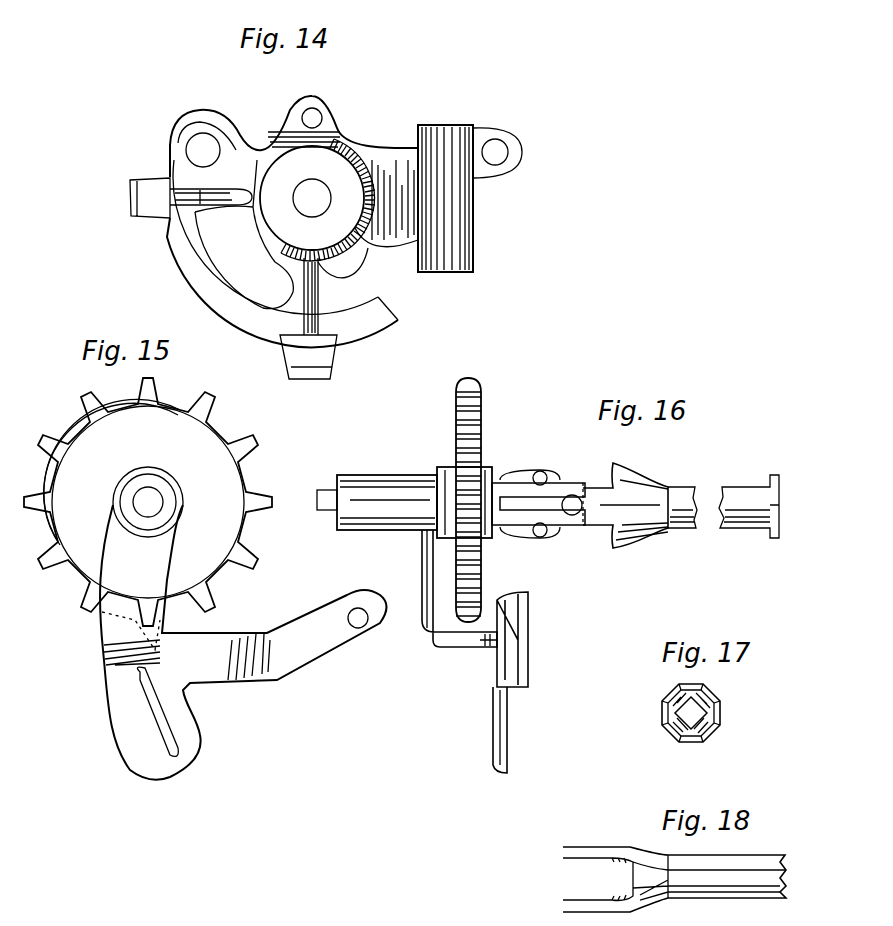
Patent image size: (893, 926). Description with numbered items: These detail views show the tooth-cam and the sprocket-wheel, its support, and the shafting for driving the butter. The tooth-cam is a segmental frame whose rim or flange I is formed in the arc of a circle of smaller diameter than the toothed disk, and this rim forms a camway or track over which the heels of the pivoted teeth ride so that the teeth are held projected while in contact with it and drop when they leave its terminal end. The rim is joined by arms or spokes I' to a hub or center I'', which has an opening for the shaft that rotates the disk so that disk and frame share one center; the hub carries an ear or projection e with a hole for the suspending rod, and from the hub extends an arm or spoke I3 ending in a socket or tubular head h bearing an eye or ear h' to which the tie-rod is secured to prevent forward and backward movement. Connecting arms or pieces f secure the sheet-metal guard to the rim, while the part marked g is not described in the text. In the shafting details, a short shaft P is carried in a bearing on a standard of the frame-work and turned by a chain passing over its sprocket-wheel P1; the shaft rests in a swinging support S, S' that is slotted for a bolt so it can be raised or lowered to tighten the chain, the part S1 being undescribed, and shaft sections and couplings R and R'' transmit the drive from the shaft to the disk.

In FIG. 14, the ear or projection e is at (326, 109).
In FIG. 14, the arms or spokes I' is at (209, 155).
In FIG. 14, the hub or center I'' is at (317, 200).
In FIG. 14, the arm or spoke I3 is at (388, 184).
In FIG. 14, the segmental rim or flange I is at (229, 294).
In FIG. 14, the connecting arms or pieces f is at (233, 278).
In FIG. 14, the pin g is at (211, 212).
In FIG. 14, the socket or tubular head h is at (445, 198).
In FIG. 14, the eye or ear h' is at (508, 153).
In FIG. 15, the short shaft P is at (150, 500).
In FIG. 16, the short shaft P is at (451, 493).
In FIG. 15, the sprocket-wheel P1 is at (228, 520).
In FIG. 16, the sprocket-wheel P1 is at (485, 418).
In FIG. 15, the swinging support S is at (243, 642).
In FIG. 16, the swinging support S is at (447, 640).
In FIG. 15, the lever arm S1 is at (298, 644).
In FIG. 16, the swinging support S' is at (524, 682).
In FIG. 16, the shaft section R is at (681, 503).
In FIG. 17, the shaft section R is at (708, 713).
In FIG. 18, the shaft section R is at (674, 874).
In FIG. 16, the shaft section or coupling R'' is at (545, 511).